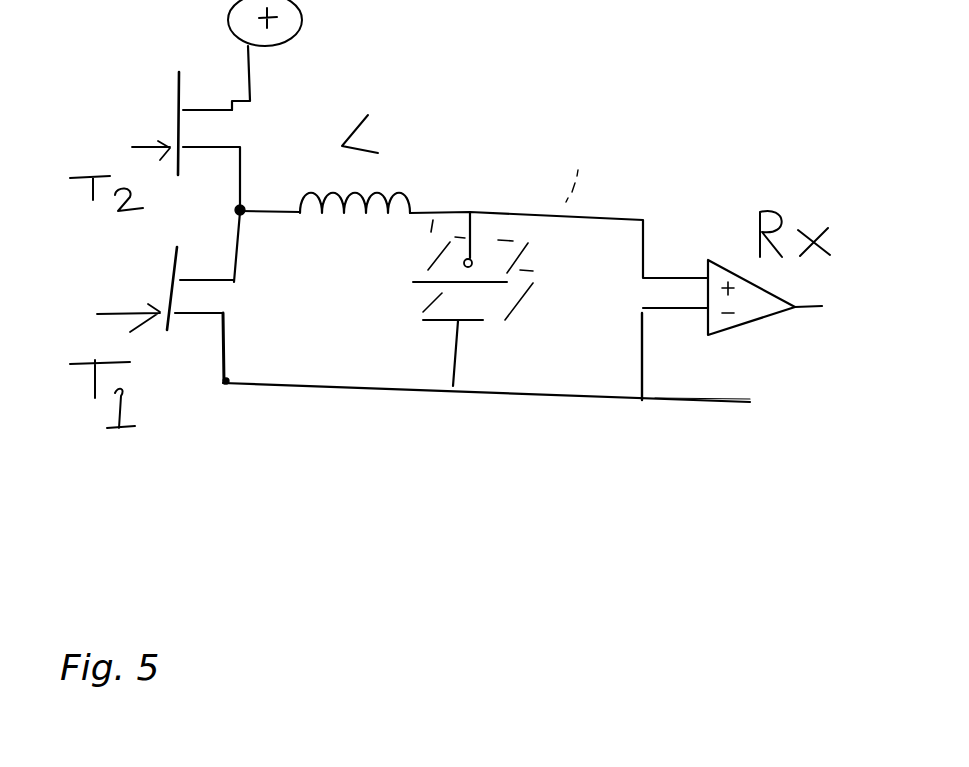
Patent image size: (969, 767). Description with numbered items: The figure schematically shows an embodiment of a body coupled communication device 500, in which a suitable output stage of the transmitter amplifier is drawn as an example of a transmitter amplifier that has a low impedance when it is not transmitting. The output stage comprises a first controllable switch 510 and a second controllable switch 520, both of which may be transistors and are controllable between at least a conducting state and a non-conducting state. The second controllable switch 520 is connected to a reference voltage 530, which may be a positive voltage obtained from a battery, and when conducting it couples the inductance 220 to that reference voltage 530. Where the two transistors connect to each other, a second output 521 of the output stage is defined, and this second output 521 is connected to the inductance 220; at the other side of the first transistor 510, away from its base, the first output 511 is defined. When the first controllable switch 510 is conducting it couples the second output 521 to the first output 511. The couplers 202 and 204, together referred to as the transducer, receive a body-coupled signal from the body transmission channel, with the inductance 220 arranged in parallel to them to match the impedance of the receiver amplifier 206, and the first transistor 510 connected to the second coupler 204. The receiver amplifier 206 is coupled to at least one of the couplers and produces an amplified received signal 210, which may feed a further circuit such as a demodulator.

The body coupled communication device 500 is at (790, 119).
The first controllable switch 510 is at (165, 289).
The first output 511 is at (254, 348).
The second controllable switch 520 is at (176, 141).
The second output 521 is at (267, 228).
The reference voltage 530 is at (290, 55).
The inductance 220 is at (364, 193).
The coupler 202 is at (445, 272).
The coupler 204 is at (445, 320).
The receiver amplifier 206 is at (719, 283).
The amplified received signal 210 is at (805, 312).